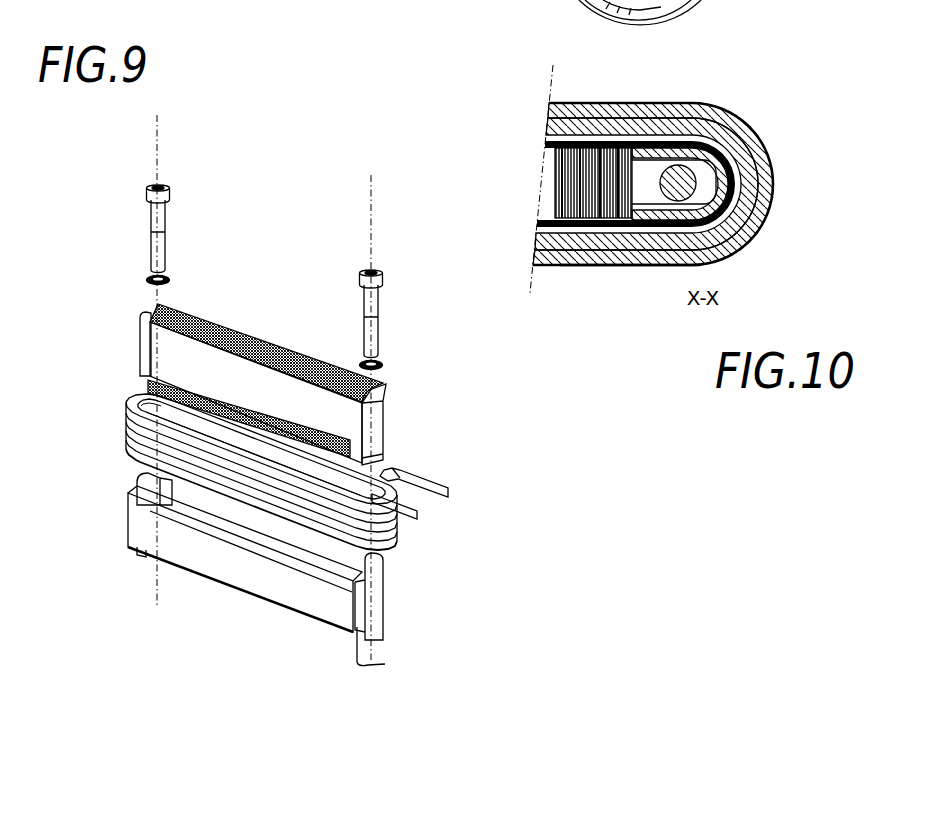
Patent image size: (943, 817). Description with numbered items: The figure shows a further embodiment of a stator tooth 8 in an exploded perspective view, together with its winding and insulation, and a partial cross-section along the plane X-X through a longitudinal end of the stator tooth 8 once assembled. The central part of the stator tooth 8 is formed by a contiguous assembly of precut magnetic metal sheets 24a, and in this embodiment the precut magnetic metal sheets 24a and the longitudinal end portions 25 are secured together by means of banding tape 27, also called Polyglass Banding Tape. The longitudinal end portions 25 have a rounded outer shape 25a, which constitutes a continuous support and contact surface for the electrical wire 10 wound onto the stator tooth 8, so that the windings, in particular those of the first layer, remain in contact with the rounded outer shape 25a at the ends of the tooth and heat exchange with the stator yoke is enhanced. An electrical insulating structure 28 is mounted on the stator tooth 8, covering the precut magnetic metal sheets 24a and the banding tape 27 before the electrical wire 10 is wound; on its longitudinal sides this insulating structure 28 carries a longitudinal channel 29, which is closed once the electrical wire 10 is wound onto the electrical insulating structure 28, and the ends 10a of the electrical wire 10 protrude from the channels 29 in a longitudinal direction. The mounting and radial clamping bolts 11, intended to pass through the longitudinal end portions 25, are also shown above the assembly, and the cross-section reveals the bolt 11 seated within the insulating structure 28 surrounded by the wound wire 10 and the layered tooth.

In FIG. 9, the stator tooth 8 is at (446, 449).
In FIG. 9, the electrical wire 10 is at (125, 423).
In FIG. 10, the electrical wire 10 is at (712, 115).
In FIG. 9, the ends of the electrical wire 10a is at (407, 522).
In FIG. 9, the mounting and radial clamping bolts 11 is at (154, 219).
In FIG. 10, the mounting and radial clamping bolts 11 is at (687, 190).
In FIG. 9, the precut magnetic metal sheets 24a is at (265, 320).
In FIG. 10, the precut magnetic metal sheets 24a is at (570, 190).
In FIG. 9, the longitudinal end portions 25 is at (131, 310).
In FIG. 10, the rounded outer shape 25a is at (722, 208).
In FIG. 9, the banding tape 27 is at (168, 350).
In FIG. 9, the electrical insulating structure 28 is at (181, 575).
In FIG. 10, the electrical insulating structure 28 is at (733, 167).
In FIG. 9, the longitudinal channel 29 is at (388, 620).
In FIG. 10, the longitudinal channel 29 is at (630, 265).